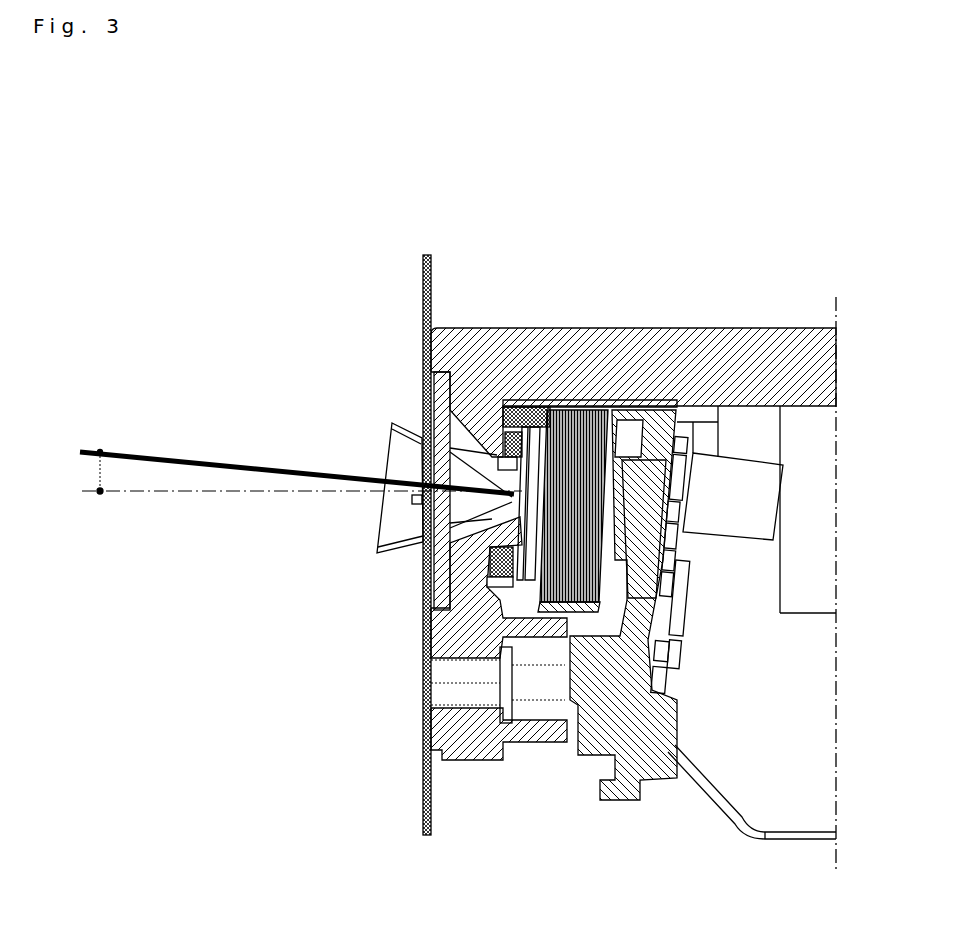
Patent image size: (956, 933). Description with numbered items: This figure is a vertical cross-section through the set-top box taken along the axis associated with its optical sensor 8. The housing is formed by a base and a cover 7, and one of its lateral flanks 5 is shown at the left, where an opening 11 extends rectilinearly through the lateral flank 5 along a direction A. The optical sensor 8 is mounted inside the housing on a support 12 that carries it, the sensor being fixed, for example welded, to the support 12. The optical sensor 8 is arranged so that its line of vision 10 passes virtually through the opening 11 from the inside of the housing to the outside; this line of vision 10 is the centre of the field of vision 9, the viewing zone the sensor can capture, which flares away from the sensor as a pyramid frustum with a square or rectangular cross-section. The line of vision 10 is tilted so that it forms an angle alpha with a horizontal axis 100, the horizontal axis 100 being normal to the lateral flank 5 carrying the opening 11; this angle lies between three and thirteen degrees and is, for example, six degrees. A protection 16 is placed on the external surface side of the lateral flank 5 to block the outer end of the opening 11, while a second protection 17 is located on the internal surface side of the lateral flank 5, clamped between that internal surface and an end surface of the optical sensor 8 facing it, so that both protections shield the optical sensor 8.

The lateral flank 5 is at (432, 628).
The cover 7 is at (714, 365).
The optical sensor 8 is at (555, 400).
The field of vision 9 is at (392, 440).
The line of vision 10 is at (200, 456).
The opening 11 is at (470, 405).
The support 12 is at (662, 610).
The protection 16 is at (433, 383).
The second protection 17 is at (523, 400).
The horizontal axis 100 is at (103, 496).